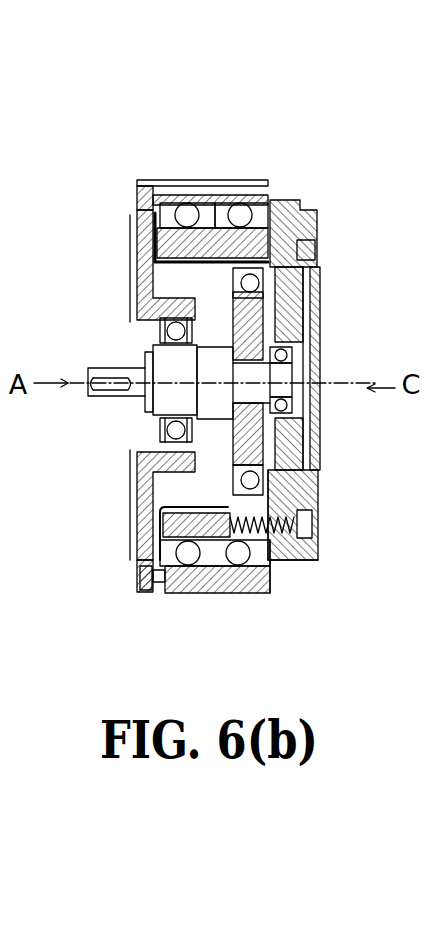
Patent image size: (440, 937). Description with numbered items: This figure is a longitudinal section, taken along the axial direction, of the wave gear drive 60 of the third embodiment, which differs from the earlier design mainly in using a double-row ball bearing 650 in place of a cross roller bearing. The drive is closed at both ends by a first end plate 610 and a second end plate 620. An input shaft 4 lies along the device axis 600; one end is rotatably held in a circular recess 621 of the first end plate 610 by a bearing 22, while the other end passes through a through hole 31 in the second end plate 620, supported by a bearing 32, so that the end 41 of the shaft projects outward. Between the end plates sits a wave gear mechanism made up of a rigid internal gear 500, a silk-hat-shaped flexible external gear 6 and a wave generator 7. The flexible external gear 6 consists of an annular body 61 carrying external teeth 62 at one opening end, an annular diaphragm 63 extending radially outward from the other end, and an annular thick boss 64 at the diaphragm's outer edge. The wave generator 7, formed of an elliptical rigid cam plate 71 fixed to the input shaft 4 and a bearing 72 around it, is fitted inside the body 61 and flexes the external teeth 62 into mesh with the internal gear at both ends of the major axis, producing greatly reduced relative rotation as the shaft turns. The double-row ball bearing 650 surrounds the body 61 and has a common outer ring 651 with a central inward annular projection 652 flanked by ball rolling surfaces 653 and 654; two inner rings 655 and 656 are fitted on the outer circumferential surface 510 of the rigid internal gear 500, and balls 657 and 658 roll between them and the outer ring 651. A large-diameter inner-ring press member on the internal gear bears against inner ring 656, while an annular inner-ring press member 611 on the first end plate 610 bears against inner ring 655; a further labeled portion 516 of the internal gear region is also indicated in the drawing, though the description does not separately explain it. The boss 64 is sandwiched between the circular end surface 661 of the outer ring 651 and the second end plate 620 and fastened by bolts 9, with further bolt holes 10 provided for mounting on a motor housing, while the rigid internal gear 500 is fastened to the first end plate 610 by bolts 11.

The wave gear drive 60 is at (346, 64).
The device axis 600 is at (116, 398).
The input shaft 4 is at (199, 414).
The through hole 31 is at (160, 331).
The bearing 32 is at (160, 347).
The second end plate 620 is at (137, 283).
The outer circumferential surface / inner-ring press member 510 is at (138, 243).
The bolt holes 10 is at (132, 195).
The inner ring 656 is at (138, 188).
The balls 658 is at (160, 183).
The common outer ring 651 is at (178, 197).
The ball rolling surface 654 is at (186, 206).
The annular projection 652 is at (234, 205).
The balls 657 is at (242, 200).
The double-row ball bearing 650 is at (208, 200).
The ball rolling surface 653 is at (262, 215).
The inner ring 655 is at (280, 220).
The rigid internal gear 500 is at (318, 223).
The rotor 516 is at (300, 268).
The first end plate 610 is at (300, 300).
The circular recess 621 is at (292, 352).
The bearing 22 is at (303, 392).
The rigid cam plate 71 is at (290, 452).
The wave generator 7 is at (300, 487).
The bearing 72 is at (305, 520).
The fastening bolts 11 is at (305, 555).
The annular body 61 is at (198, 510).
The annular diaphragm 63 is at (152, 528).
The annular thick boss 64 is at (145, 562).
The fastening bolts 9 is at (136, 580).
The circular end surface 661 is at (238, 596).
The flexible external gear 6 is at (224, 592).
The inner-ring press member 611 is at (278, 572).
The external teeth 62 is at (303, 566).
The end of the input shaft 41 is at (148, 414).